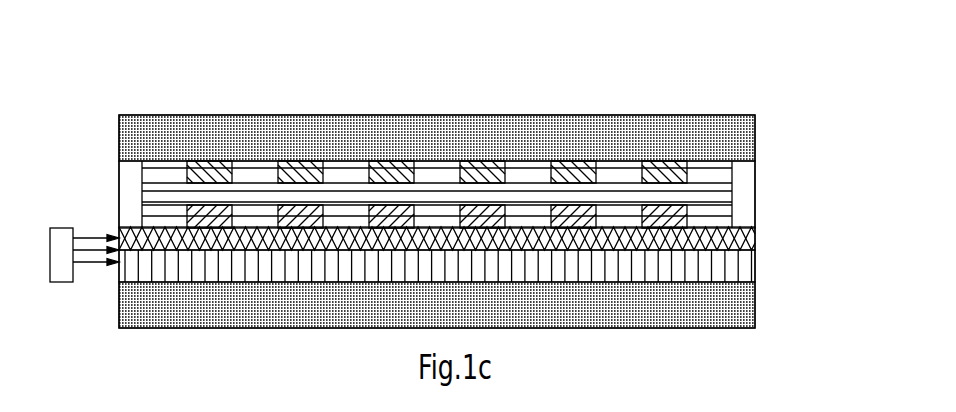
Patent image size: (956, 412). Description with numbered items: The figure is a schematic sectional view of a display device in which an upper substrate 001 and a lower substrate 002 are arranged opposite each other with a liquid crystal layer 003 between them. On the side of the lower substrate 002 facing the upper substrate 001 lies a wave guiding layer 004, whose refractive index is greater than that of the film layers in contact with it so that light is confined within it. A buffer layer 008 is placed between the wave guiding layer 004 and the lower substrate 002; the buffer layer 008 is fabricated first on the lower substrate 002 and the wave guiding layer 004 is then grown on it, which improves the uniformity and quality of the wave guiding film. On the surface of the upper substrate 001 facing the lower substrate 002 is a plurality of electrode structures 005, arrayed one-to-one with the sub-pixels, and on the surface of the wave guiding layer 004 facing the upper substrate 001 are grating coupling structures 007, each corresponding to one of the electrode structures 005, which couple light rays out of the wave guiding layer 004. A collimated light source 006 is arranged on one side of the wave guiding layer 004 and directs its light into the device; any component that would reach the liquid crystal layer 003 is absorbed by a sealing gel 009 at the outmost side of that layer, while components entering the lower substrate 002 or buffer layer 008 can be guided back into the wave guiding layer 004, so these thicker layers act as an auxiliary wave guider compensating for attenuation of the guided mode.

The upper substrate 001 is at (745, 140).
The lower substrate 002 is at (745, 306).
The liquid crystal layer 003 is at (732, 192).
The wave guiding layer 004 is at (743, 240).
The electrode structures 005 is at (690, 171).
The collimated light source 006 is at (68, 237).
The grating coupling structures 007 is at (668, 216).
The buffer layer 008 is at (742, 270).
The sealing gel 009 is at (132, 192).